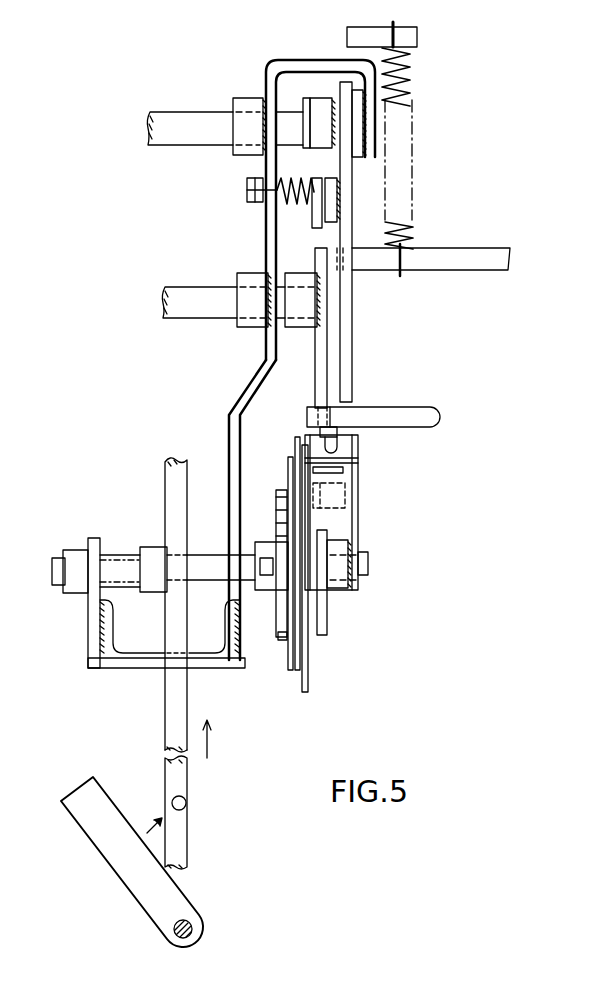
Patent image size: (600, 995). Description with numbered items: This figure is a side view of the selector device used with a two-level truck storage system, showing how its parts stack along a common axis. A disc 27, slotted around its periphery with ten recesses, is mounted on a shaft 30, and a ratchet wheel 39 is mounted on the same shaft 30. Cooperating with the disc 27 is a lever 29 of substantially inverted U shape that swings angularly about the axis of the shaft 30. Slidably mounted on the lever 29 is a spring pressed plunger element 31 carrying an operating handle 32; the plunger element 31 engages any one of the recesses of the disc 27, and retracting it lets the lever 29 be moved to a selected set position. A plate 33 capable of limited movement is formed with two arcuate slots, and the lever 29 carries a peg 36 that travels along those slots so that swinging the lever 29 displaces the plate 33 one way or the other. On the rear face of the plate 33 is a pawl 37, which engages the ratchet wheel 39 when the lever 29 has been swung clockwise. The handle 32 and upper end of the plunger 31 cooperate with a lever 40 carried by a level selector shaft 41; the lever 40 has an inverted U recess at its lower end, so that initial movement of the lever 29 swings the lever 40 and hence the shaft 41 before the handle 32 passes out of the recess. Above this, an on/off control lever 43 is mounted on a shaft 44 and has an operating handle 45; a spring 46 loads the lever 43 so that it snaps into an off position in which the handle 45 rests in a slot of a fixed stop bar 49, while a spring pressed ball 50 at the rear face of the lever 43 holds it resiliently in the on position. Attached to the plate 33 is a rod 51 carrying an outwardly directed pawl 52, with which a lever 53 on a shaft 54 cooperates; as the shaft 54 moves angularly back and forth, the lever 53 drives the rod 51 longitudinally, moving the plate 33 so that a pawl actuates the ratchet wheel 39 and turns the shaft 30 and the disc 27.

The disc 27 is at (327, 608).
The lever 29 is at (360, 522).
The shaft 30 is at (248, 548).
The plunger element 31 is at (341, 497).
The operating handle 32 is at (402, 407).
The plate 33 is at (307, 684).
The peg 36 is at (301, 492).
The pawl 37 is at (285, 591).
The ratchet wheel 39 is at (283, 640).
The lever 40 is at (318, 374).
The level selector shaft 41 is at (178, 297).
The on/off control lever 43 is at (343, 236).
The shaft 44 is at (173, 152).
The operating handle 45 is at (458, 256).
The spring 46 is at (411, 86).
The stop bar 49 is at (358, 160).
The spring pressed ball 50 is at (318, 212).
The rod 51 is at (165, 473).
The pawl 52 is at (187, 803).
The lever 53 is at (103, 800).
The shaft 54 is at (192, 928).